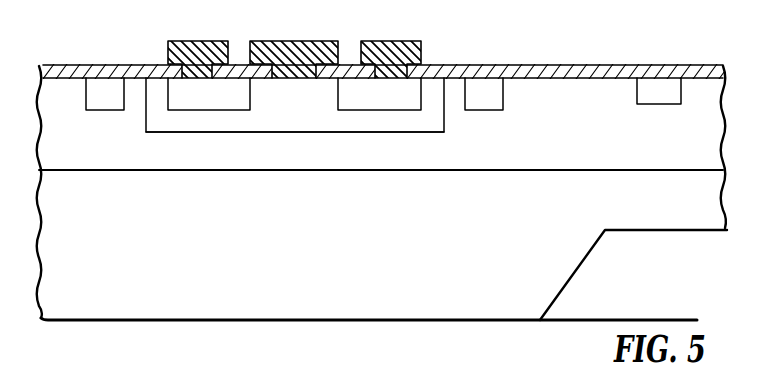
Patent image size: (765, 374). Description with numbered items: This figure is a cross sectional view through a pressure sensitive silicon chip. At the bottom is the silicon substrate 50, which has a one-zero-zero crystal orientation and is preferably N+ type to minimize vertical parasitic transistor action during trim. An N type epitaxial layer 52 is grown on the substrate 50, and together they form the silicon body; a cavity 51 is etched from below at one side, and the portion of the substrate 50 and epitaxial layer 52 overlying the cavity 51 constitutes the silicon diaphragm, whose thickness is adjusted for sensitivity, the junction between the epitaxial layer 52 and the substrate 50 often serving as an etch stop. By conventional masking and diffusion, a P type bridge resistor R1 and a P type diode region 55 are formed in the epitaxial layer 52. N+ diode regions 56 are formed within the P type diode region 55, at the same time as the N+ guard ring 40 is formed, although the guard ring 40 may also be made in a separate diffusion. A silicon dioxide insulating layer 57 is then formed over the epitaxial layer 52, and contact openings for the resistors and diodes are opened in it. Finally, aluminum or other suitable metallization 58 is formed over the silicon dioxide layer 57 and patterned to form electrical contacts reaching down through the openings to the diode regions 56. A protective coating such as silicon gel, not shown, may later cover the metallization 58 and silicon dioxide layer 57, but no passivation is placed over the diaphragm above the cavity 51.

The N+ guard ring 40 is at (86, 100).
The silicon substrate 50 is at (306, 303).
The cavity 51 is at (648, 286).
The epitaxial layer 52 is at (305, 163).
The P type diode region 55 is at (444, 122).
The N+ diode regions 56 is at (206, 105).
The silicon dioxide insulating layer 57 is at (592, 69).
The metallization 58 is at (199, 41).
The bridge resistor R1 is at (652, 104).